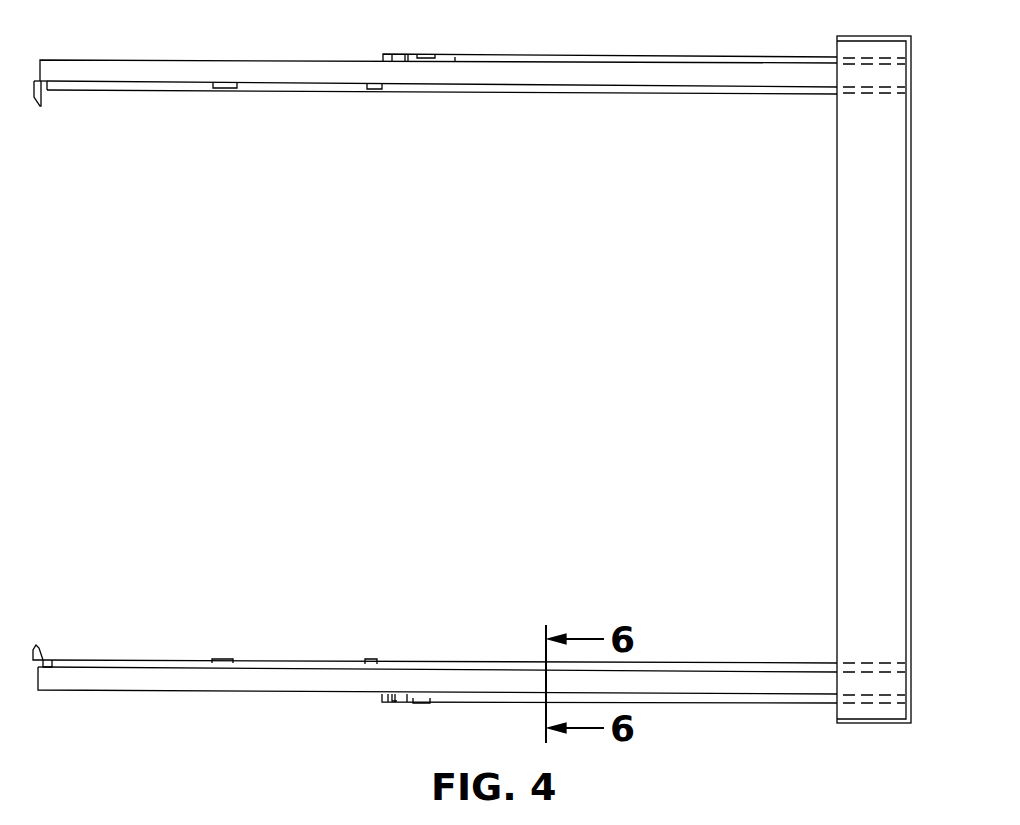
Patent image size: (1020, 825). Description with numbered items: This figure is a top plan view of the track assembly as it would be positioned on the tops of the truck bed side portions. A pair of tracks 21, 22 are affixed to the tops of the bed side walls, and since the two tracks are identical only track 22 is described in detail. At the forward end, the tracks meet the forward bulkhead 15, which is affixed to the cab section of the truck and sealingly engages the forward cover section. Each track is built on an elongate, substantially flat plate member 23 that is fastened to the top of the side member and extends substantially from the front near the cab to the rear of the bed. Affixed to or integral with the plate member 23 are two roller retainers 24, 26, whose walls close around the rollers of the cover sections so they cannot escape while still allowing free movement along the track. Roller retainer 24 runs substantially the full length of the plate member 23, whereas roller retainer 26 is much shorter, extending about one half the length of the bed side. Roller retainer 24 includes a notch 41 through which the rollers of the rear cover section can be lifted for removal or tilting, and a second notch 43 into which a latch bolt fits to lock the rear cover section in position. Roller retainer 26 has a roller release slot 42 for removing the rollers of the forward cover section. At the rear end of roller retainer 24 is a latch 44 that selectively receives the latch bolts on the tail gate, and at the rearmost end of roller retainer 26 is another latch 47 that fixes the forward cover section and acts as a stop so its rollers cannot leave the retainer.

The forward bulkhead 15 is at (860, 36).
The track 21 is at (518, 44).
The track 22 is at (485, 555).
The plate member 23 is at (273, 682).
The roller retainer 24 is at (712, 662).
The roller retainer 26 is at (778, 704).
The notch 41 is at (222, 666).
The roller release slot 42 is at (426, 704).
The notch 43 is at (375, 659).
The latch 44 is at (40, 658).
The latch 47 is at (393, 701).